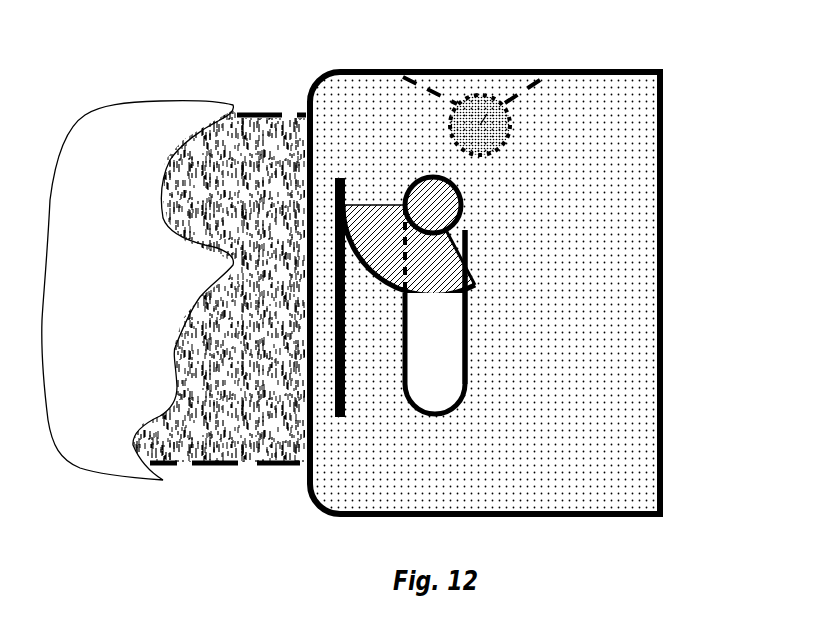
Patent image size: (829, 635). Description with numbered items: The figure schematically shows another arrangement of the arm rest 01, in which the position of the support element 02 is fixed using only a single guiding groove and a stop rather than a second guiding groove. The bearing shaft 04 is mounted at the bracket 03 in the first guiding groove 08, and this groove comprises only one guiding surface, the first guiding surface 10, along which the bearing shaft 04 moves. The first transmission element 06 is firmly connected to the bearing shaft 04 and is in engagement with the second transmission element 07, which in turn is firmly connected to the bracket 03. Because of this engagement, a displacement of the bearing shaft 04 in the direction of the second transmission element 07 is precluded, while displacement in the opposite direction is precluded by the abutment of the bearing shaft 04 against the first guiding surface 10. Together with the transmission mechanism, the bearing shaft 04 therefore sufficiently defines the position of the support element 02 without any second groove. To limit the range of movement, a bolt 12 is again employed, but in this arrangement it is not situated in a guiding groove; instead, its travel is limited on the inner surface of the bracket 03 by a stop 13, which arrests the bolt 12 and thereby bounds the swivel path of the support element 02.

The arm rest 01 is at (173, 23).
The support element 02 is at (200, 353).
The bracket 03 is at (618, 327).
The bearing shaft 04 is at (430, 195).
The first transmission element 06 is at (390, 230).
The second transmission element 07 is at (333, 256).
The first guiding groove 08 is at (427, 377).
The first guiding surface 10 is at (462, 363).
The bolt 12 is at (497, 127).
The stop 13 is at (515, 104).